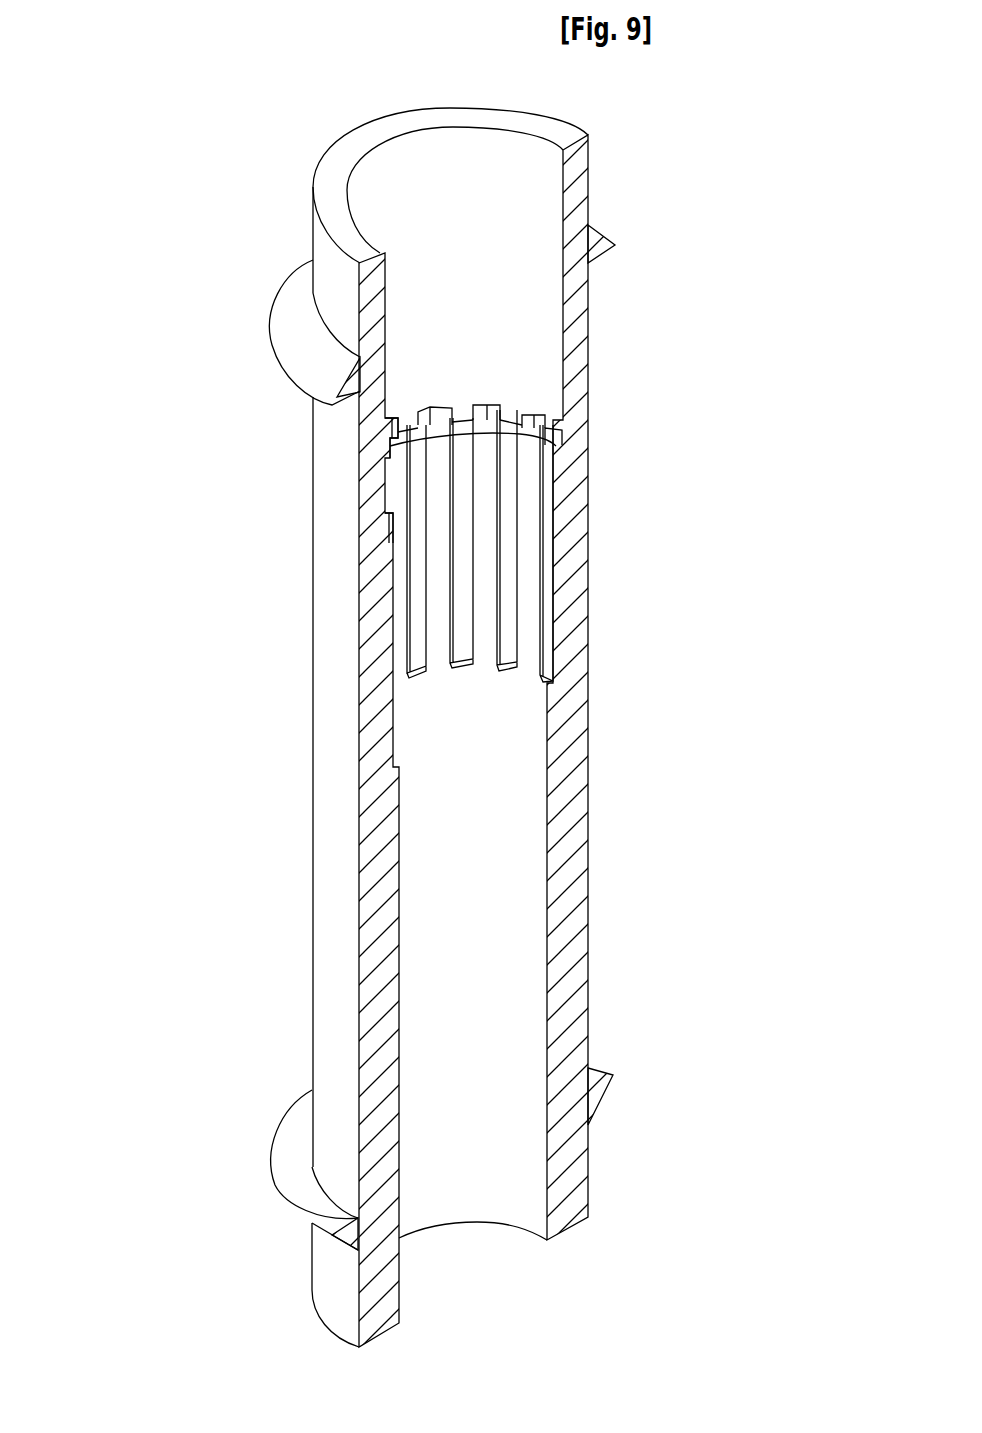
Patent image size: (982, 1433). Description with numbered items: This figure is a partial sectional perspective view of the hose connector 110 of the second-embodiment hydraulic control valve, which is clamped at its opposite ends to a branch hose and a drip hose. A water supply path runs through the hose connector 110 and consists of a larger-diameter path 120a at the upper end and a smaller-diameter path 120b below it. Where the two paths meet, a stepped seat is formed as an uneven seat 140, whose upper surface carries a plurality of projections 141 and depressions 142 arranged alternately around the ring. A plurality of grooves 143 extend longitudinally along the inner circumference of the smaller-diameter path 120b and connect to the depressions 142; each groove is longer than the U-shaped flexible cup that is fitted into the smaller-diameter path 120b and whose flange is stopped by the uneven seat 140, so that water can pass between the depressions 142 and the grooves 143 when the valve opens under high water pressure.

The hose connector 110 is at (338, 750).
The larger-diameter path 120a is at (472, 200).
The smaller-diameter path 120b is at (492, 900).
The uneven seat 140 is at (430, 501).
The projections 141 is at (545, 417).
The depressions 142 is at (385, 423).
The grooves 143 is at (462, 503).